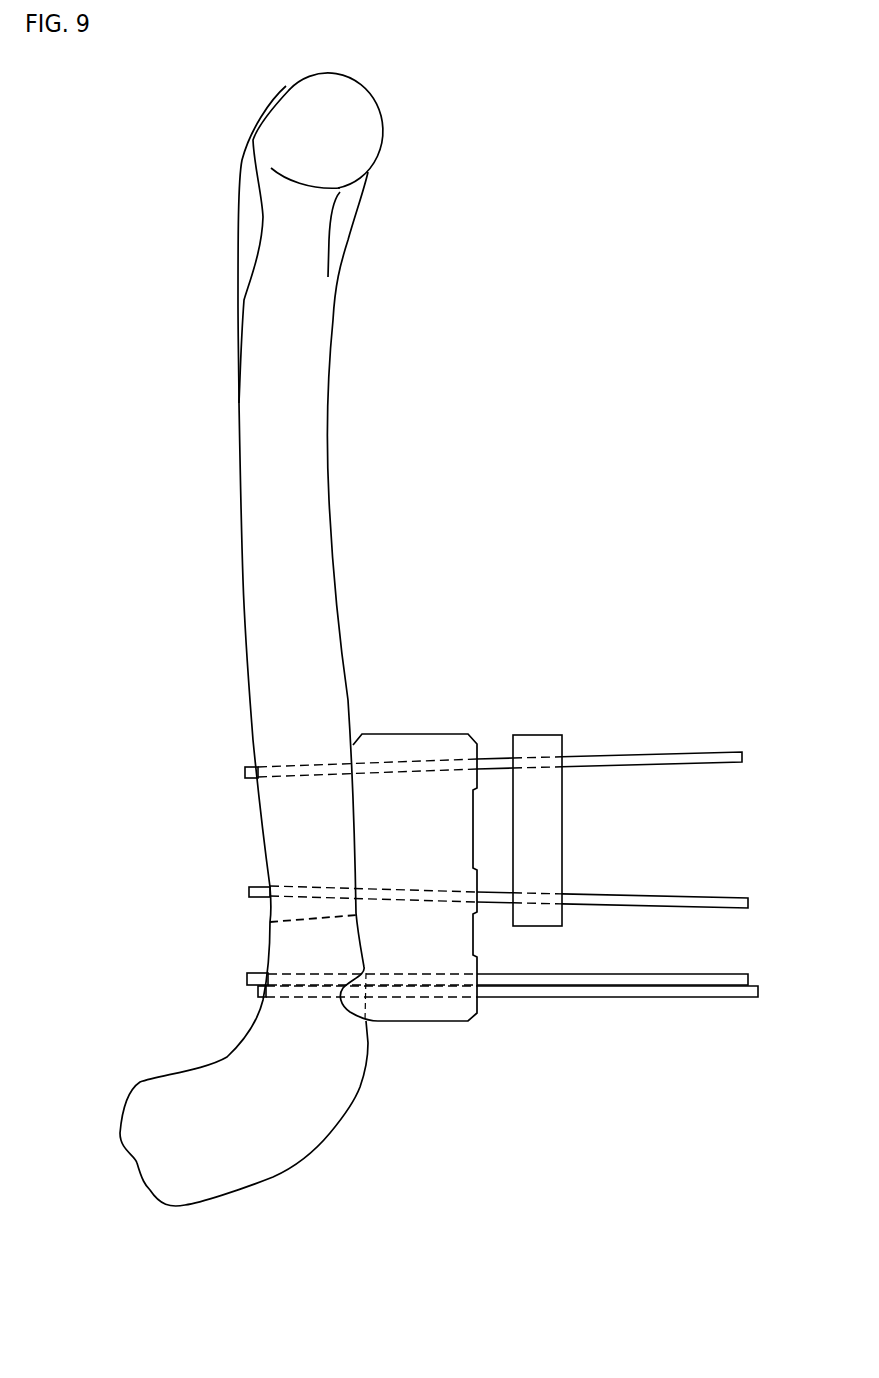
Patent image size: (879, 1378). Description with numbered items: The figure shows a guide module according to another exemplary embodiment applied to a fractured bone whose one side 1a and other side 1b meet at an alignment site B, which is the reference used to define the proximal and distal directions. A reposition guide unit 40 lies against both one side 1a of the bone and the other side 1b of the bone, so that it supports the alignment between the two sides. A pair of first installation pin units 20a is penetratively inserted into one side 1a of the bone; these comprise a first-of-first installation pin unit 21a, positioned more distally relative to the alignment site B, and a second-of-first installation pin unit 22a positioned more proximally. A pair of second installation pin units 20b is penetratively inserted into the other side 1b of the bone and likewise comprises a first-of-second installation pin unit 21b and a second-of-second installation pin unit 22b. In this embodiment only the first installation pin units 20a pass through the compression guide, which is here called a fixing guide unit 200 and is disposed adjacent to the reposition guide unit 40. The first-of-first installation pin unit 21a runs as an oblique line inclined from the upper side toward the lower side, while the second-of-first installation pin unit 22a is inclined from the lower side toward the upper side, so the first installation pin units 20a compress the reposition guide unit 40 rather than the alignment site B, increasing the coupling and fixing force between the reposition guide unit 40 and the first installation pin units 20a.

The one side of the bone 1a is at (280, 580).
The other side of the bone 1b is at (163, 1103).
The alignment site B is at (312, 922).
The reposition guide unit 40 is at (437, 1013).
The fixing guide unit 200 is at (547, 842).
The first installation pin units 20a is at (763, 795).
The first-of-first installation pin unit 21a is at (690, 757).
The second-of-first installation pin unit 22a is at (702, 900).
The second installation pin units 20b is at (717, 1080).
The first-of-second installation pin unit 21b is at (627, 977).
The second-of-second installation pin unit 22b is at (690, 989).